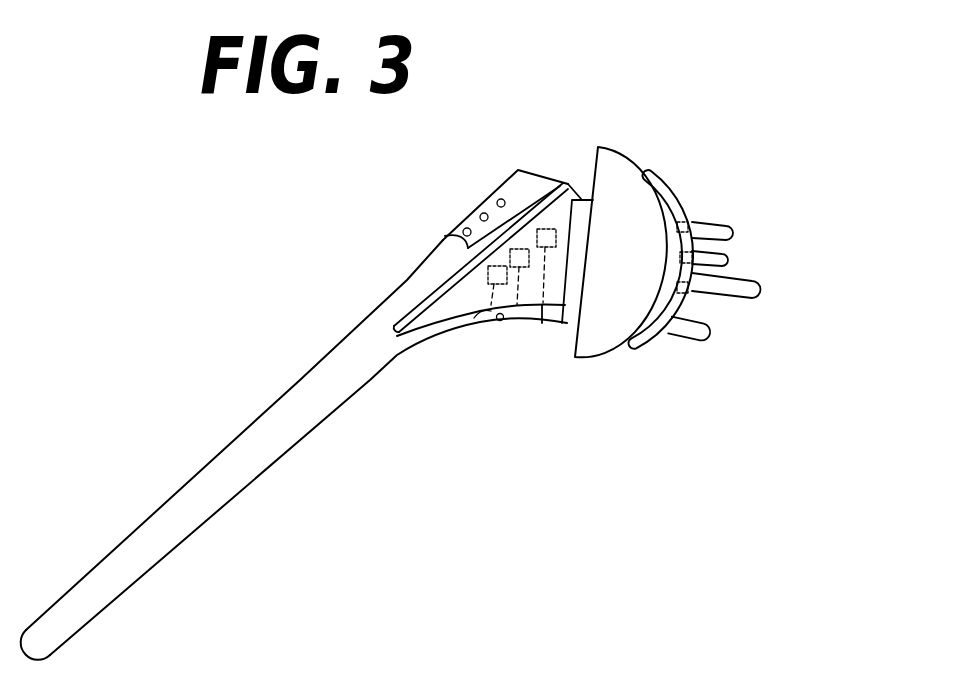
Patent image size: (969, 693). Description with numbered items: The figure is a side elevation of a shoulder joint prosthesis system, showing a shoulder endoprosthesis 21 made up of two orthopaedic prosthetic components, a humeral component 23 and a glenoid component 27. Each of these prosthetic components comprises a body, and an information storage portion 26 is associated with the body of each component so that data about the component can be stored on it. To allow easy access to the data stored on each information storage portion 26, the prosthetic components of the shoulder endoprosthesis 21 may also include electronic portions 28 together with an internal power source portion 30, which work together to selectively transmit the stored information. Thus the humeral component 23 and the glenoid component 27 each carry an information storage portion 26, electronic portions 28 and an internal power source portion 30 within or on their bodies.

The shoulder endoprosthesis 21 is at (372, 309).
The humeral component 23 is at (311, 409).
The information storage portion 26 is at (690, 203).
The glenoid component 27 is at (777, 285).
The electronic portions 28 is at (735, 247).
The internal power source portion 30 is at (695, 297).